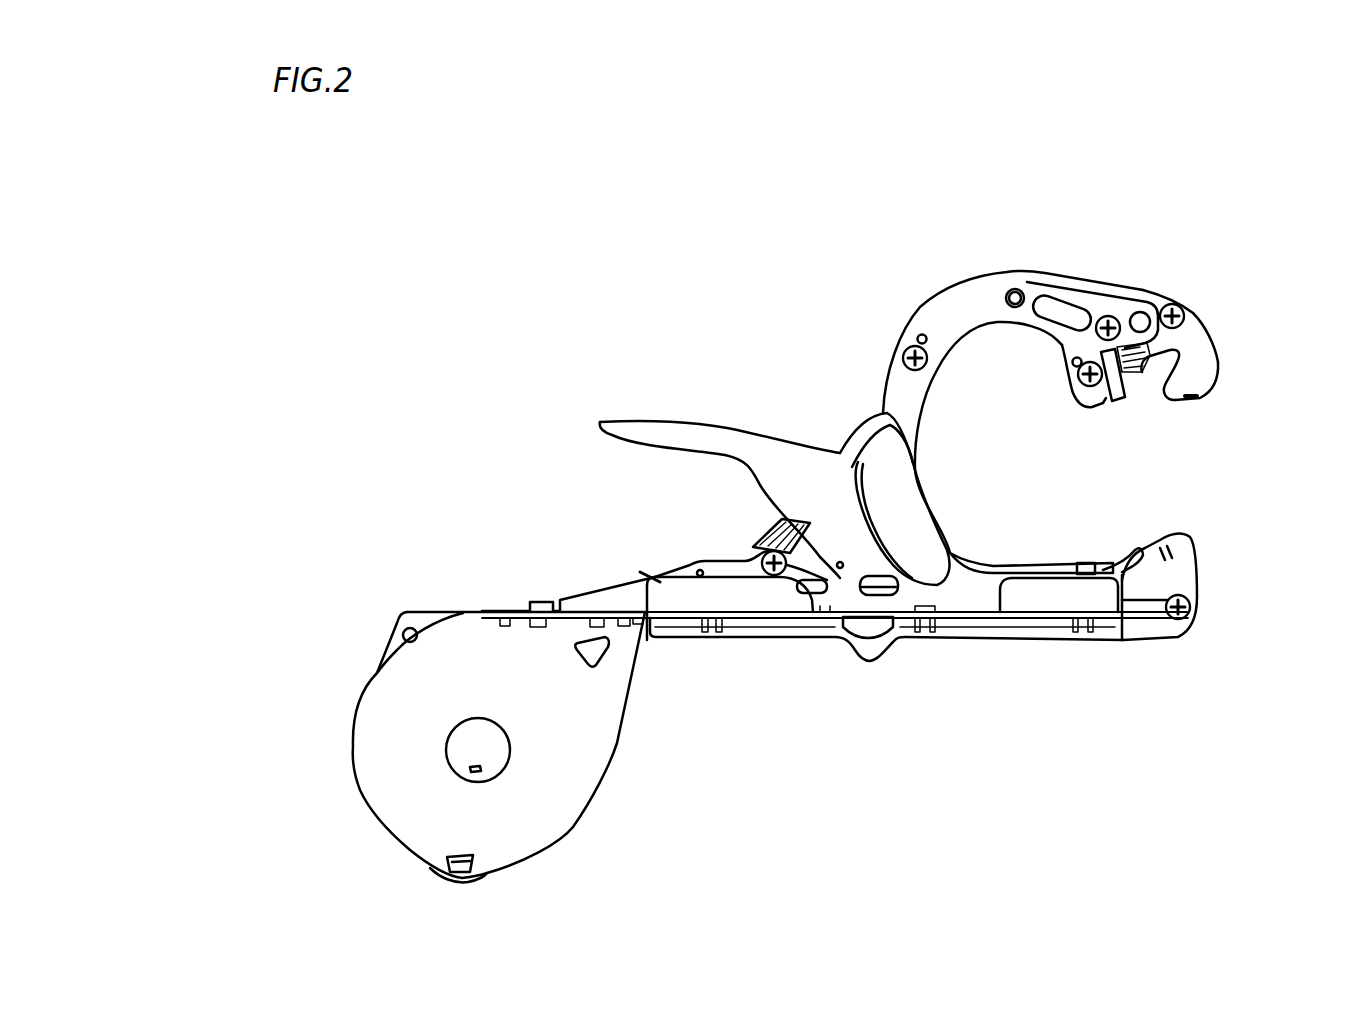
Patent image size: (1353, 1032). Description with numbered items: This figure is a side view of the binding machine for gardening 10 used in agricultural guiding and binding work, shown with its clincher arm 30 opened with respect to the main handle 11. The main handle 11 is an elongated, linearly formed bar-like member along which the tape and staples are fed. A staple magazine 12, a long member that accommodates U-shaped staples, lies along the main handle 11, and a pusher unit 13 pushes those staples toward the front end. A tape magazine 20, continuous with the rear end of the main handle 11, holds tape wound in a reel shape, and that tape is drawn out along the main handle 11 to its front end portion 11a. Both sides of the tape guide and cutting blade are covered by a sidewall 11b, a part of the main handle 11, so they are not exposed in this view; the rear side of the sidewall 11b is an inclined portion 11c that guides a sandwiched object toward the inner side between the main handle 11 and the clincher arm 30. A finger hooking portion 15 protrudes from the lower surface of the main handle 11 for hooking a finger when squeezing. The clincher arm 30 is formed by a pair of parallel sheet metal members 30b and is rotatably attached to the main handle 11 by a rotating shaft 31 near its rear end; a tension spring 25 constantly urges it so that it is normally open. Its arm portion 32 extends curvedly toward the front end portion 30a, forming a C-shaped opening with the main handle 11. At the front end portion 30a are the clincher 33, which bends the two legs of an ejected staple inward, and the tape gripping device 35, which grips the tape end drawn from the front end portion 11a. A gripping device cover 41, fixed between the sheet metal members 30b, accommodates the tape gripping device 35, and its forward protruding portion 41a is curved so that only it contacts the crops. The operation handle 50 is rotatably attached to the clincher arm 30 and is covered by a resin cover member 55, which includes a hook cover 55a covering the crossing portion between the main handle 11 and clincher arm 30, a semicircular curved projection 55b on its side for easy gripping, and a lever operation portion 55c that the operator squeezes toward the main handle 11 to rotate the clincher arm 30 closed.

The binding machine for gardening 10 is at (565, 298).
The main handle 11 is at (737, 657).
The front end portion of the main handle 11a is at (1188, 532).
The sidewall 11b is at (1190, 578).
The inclined portion 11c is at (1158, 545).
The staple magazine 12 is at (1053, 566).
The pusher unit 13 is at (647, 577).
The finger hooking portion 15 is at (868, 663).
The tape magazine 20 is at (585, 829).
The tension spring 25 is at (772, 530).
The clincher arm 30 is at (1095, 272).
The front end portion of the clincher arm 30a is at (1192, 412).
The sheet metal members 30b is at (977, 282).
The rotating shaft 31 is at (760, 560).
The arm portion 32 is at (972, 333).
The clincher 33 is at (1097, 408).
The tape gripping device 35 is at (1133, 383).
The gripping device cover 41 is at (1195, 305).
The forward protruding portion 41a is at (1220, 352).
The operation handle 50 is at (748, 415).
The cover member 55 is at (752, 474).
The hook cover 55a is at (945, 575).
The curved projection 55b is at (866, 545).
The lever operation portion 55c is at (662, 420).